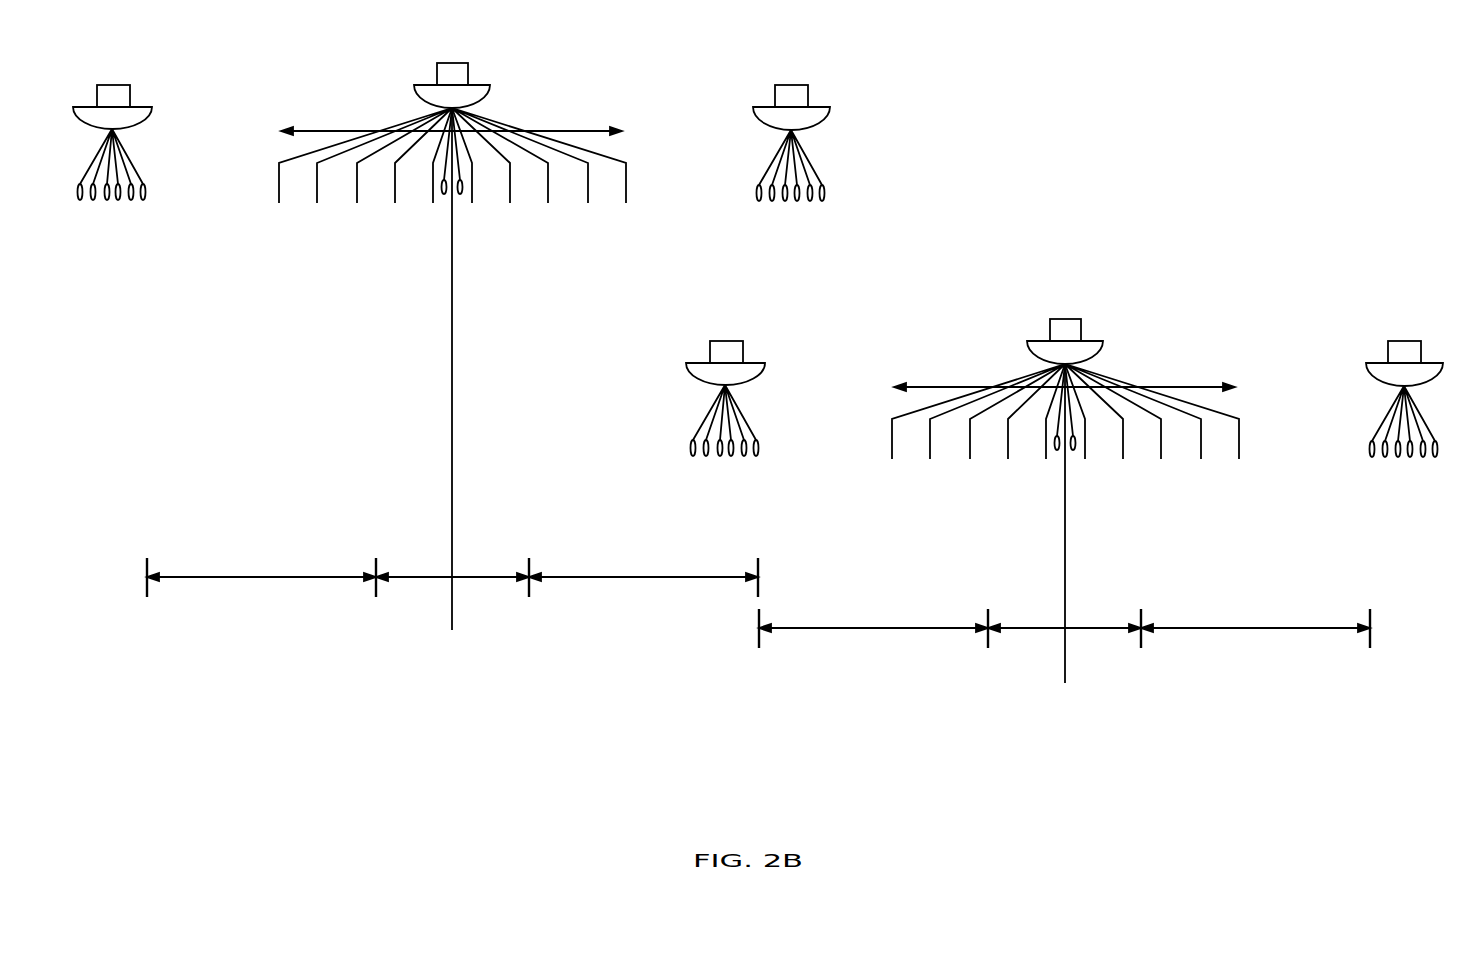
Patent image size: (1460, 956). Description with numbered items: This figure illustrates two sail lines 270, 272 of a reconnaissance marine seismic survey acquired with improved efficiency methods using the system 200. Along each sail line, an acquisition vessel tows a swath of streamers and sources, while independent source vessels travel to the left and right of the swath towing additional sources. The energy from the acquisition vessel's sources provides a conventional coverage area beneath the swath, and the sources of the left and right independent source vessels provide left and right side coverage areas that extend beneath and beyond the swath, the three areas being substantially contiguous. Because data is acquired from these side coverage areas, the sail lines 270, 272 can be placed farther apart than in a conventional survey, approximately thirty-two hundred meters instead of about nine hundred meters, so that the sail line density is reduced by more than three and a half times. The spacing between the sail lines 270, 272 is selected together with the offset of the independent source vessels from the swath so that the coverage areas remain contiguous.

The increased efficiency marine seismic acquisition system 200 is at (1143, 60).
The sail line 270 is at (453, 385).
The sail line 272 is at (1066, 562).